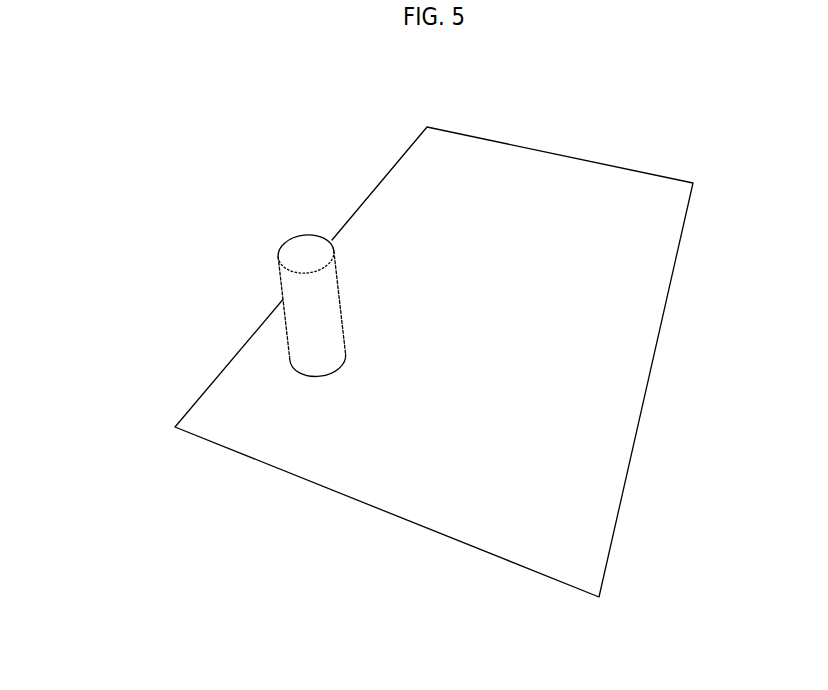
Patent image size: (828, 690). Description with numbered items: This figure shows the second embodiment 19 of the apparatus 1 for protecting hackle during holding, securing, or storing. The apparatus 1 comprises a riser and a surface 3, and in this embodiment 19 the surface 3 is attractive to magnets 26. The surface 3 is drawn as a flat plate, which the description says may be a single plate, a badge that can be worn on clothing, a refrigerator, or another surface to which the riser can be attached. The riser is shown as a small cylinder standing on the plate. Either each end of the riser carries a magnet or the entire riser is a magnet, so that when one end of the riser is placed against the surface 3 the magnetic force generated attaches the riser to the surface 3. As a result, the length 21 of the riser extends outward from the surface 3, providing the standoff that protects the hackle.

The apparatus 1 is at (367, 368).
The second embodiment 19 is at (158, 105).
The surface 3 is at (434, 362).
The surface attractive to magnets 26 is at (434, 362).
The length of the riser 21 is at (337, 233).